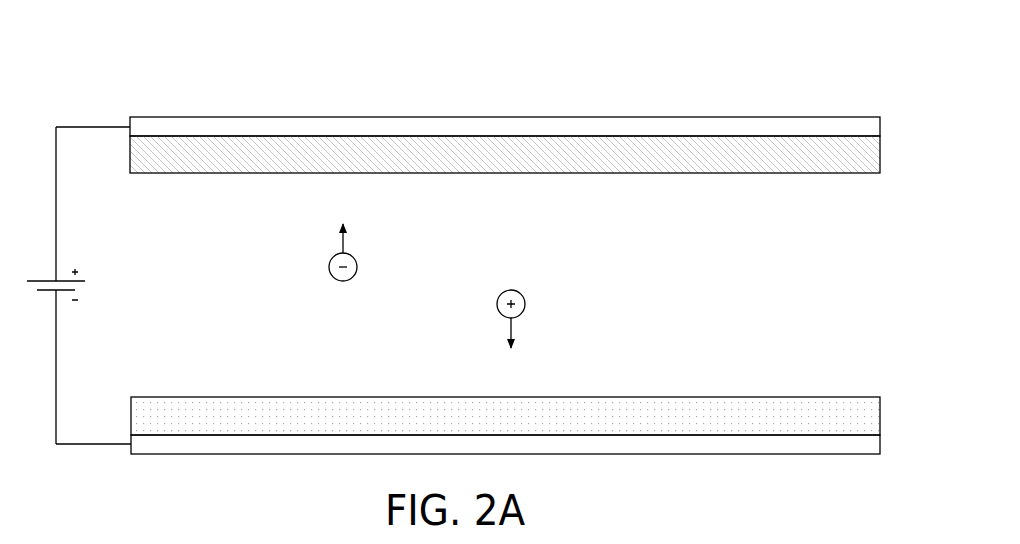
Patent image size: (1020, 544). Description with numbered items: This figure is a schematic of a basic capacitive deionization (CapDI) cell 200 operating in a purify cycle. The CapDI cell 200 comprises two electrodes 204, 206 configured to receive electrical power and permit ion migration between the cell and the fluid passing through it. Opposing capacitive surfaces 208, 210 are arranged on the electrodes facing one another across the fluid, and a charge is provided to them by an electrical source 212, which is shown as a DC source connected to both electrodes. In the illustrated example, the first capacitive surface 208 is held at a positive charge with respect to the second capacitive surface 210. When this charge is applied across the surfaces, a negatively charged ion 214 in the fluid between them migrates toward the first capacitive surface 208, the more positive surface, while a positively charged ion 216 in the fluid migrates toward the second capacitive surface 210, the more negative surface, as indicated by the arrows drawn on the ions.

The CapDI cell 200 is at (153, 73).
The electrode 204 is at (661, 127).
The electrode 206 is at (248, 445).
The first capacitive surface 208 is at (622, 160).
The second capacitive surface 210 is at (210, 412).
The electrical source 212 is at (102, 288).
The negatively charged ion 214 is at (329, 268).
The positively charged ion 216 is at (525, 303).